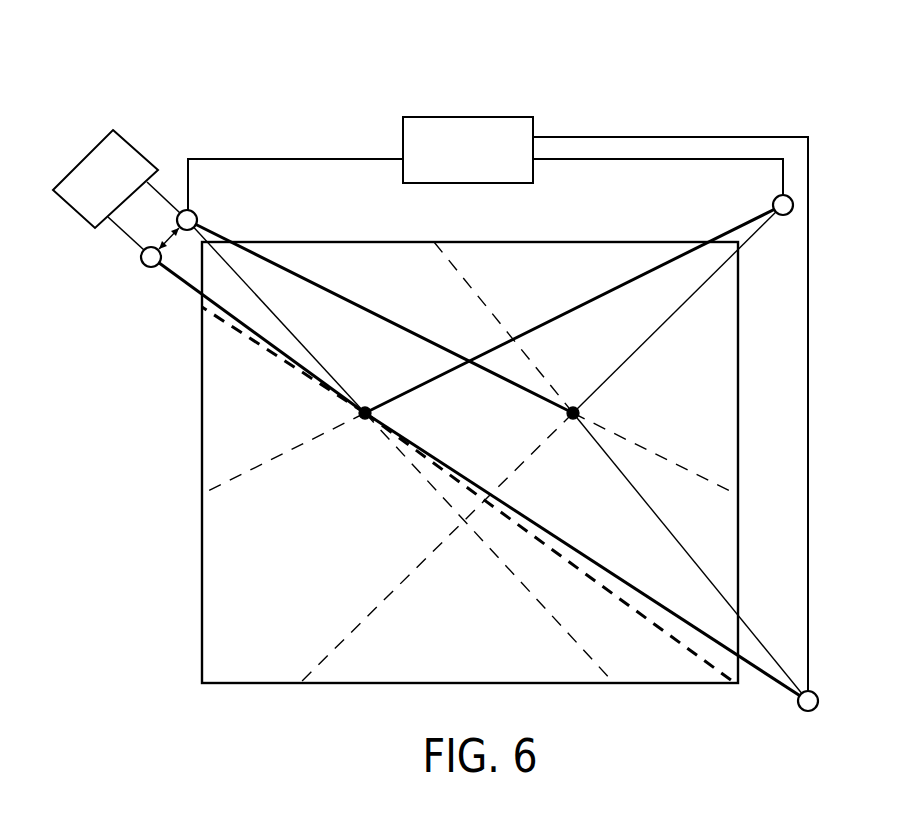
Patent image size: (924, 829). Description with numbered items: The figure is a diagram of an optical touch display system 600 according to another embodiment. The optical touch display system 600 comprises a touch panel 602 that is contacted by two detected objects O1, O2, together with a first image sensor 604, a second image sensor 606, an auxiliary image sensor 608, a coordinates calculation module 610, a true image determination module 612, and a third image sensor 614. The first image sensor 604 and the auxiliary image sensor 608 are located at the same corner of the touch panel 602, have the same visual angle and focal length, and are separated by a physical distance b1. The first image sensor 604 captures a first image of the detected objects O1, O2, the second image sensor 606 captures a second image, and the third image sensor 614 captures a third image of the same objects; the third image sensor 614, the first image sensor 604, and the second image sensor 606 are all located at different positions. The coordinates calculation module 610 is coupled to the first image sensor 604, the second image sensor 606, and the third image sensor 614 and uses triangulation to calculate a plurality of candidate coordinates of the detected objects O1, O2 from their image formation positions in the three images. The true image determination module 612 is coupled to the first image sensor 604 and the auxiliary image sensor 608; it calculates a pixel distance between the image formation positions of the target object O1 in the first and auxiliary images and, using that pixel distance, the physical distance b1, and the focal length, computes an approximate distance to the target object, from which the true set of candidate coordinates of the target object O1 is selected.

The optical touch display system 600 is at (758, 96).
The touch panel 602 is at (202, 578).
The first image sensor 604 is at (197, 214).
The second image sensor 606 is at (774, 200).
The auxiliary image sensor 608 is at (151, 267).
The coordinates calculation module 610 is at (498, 404).
The true image determination module 612 is at (116, 190).
The third image sensor 614 is at (808, 711).
The detected object O1 is at (365, 421).
The detected object O2 is at (580, 413).
The physical distance b1 is at (157, 229).